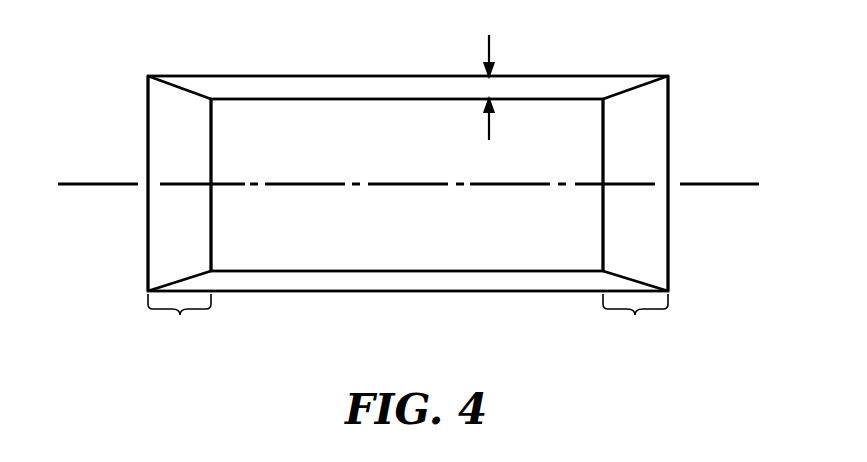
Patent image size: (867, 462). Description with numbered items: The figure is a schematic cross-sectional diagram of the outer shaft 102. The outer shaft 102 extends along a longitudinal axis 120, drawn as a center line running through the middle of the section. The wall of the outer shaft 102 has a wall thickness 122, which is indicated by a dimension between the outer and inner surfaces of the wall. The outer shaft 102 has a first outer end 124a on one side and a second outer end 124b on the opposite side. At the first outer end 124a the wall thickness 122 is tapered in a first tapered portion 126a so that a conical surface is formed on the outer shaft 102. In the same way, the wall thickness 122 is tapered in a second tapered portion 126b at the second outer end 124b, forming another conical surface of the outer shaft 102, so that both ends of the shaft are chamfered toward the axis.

The outer shaft 102 is at (280, 76).
The longitudinal axis 120 is at (717, 184).
The wall thickness 122 is at (490, 88).
The first outer end 124a is at (668, 113).
The second outer end 124b is at (148, 115).
The first tapered portion 126a is at (635, 316).
The second tapered portion 126b is at (180, 316).